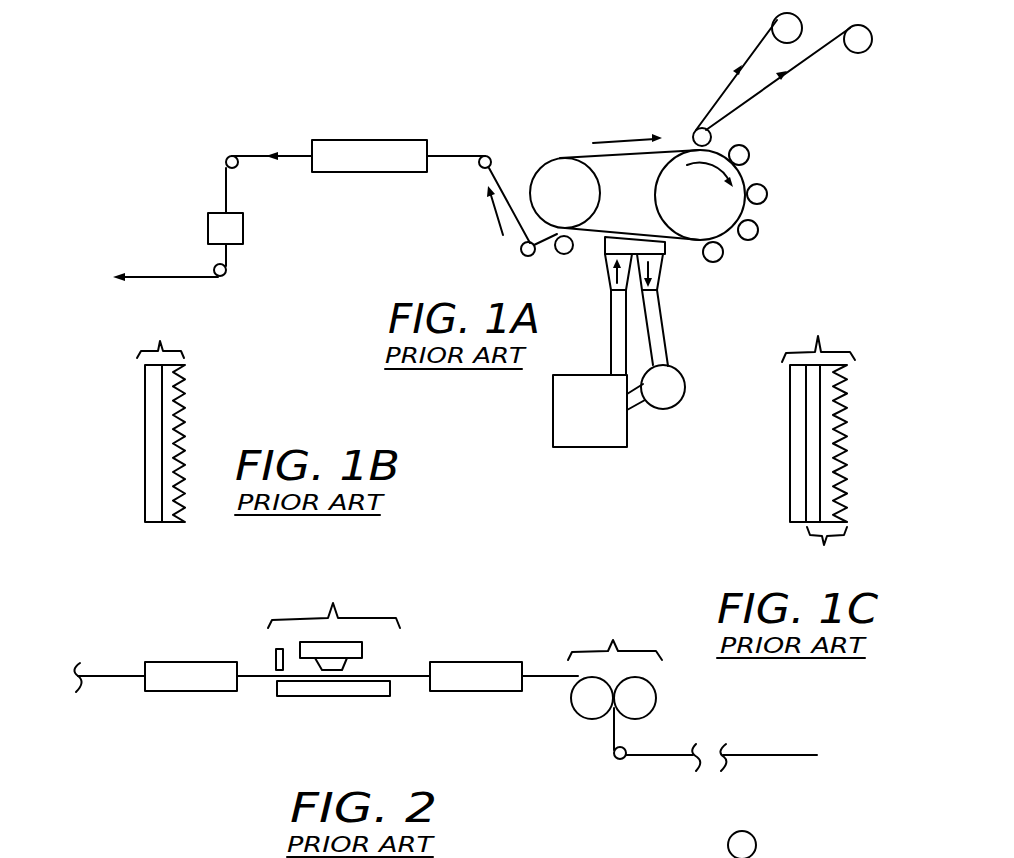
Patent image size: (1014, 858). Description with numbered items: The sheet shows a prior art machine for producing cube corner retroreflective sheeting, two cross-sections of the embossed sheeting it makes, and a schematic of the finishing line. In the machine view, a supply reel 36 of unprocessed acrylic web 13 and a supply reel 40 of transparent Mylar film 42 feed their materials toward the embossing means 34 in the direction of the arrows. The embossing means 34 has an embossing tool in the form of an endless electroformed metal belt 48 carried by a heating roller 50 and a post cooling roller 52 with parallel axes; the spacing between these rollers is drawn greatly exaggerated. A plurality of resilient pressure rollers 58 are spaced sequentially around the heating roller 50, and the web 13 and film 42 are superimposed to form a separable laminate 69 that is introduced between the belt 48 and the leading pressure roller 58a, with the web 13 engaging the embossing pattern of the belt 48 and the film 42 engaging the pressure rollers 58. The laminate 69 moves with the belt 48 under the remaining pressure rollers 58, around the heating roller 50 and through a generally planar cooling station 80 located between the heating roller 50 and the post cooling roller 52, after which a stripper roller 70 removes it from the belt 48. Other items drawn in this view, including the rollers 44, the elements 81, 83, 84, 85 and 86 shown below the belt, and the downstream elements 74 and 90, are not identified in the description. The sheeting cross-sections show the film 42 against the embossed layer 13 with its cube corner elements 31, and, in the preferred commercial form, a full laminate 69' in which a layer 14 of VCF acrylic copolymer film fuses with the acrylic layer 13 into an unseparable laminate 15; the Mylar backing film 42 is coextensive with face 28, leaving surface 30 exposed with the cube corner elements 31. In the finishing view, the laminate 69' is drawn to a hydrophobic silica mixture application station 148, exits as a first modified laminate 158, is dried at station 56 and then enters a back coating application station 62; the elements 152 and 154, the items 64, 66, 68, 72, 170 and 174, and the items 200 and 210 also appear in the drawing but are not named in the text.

In FIG. 1A, the acrylic web 13 is at (721, 91).
In FIG. 1B, the acrylic web 13 is at (173, 390).
In FIG. 1C, the acrylic web 13 is at (829, 386).
In FIG. 1C, the VCF A-223 layer 14 is at (813, 426).
In FIG. 1C, the unseparable laminate 15 is at (827, 550).
In FIG. 2, the face 28 is at (745, 757).
In FIG. 2, the exposed surface 30 is at (772, 755).
In FIG. 1B, the cube corner elements 31 is at (181, 420).
In FIG. 1C, the cube corner elements 31 is at (843, 426).
In FIG. 1A, the embossing means 34 is at (643, 194).
In FIG. 1A, the supply reel 36 is at (773, 23).
In FIG. 1A, the supply reel 40 is at (862, 42).
In FIG. 1A, the Mylar film 42 is at (802, 62).
In FIG. 1B, the Mylar film 42 is at (150, 483).
In FIG. 1C, the Mylar film 42 is at (799, 465).
In FIG. 1A, the guide rollers 44 is at (227, 159).
In FIG. 1A, the endless electroformed metal belt 48 is at (585, 157).
In FIG. 1A, the heating roller 50 is at (716, 211).
In FIG. 1A, the post cooling roller 52 is at (580, 209).
In FIG. 2, the drying station 56 is at (472, 685).
In FIG. 1A, the pressure rollers 58 is at (750, 152).
In FIG. 1A, the leading pressure roller 58a is at (711, 131).
In FIG. 2, the back coating application station 62 is at (334, 601).
In FIG. 2, the corona charger 64 is at (362, 652).
In FIG. 2, the charger shield 66 is at (347, 667).
In FIG. 2, the guide 68 is at (275, 660).
In FIG. 1A, the separable laminate 69 is at (789, 177).
In FIG. 1B, the separable laminate 69 is at (160, 334).
In FIG. 1C, the full laminate 69' is at (818, 335).
In FIG. 2, the full laminate 69' is at (665, 733).
In FIG. 1A, the stripper roller 70 is at (567, 254).
In FIG. 2, the web path 72 is at (257, 678).
In FIG. 1A, the cutter 74 is at (236, 226).
In FIG. 1A, the cooling station 80 is at (683, 268).
In FIG. 1A, the development housing 81 is at (645, 243).
In FIG. 1A, the toner supply 83 is at (604, 414).
In FIG. 1A, the toner supply conduit 84 is at (610, 346).
In FIG. 2, the toner supply conduit 84 is at (110, 676).
In FIG. 1A, the return conduit 85 is at (661, 330).
In FIG. 1A, the pump 86 is at (684, 377).
In FIG. 1A, the processing station 90 is at (367, 140).
In FIG. 2, the hydrophobic silica mixture application station 148 is at (615, 635).
In FIG. 2, the roller 152 is at (616, 754).
In FIG. 2, the laminating rollers 154 is at (588, 708).
In FIG. 2, the first modified laminate 158 is at (540, 674).
In FIG. 2, the platen 170 is at (362, 690).
In FIG. 2, the cleaning station 174 is at (200, 687).
In FIG. 2, the roll 200 is at (728, 843).
In FIG. 2, the roll 210 is at (790, 842).